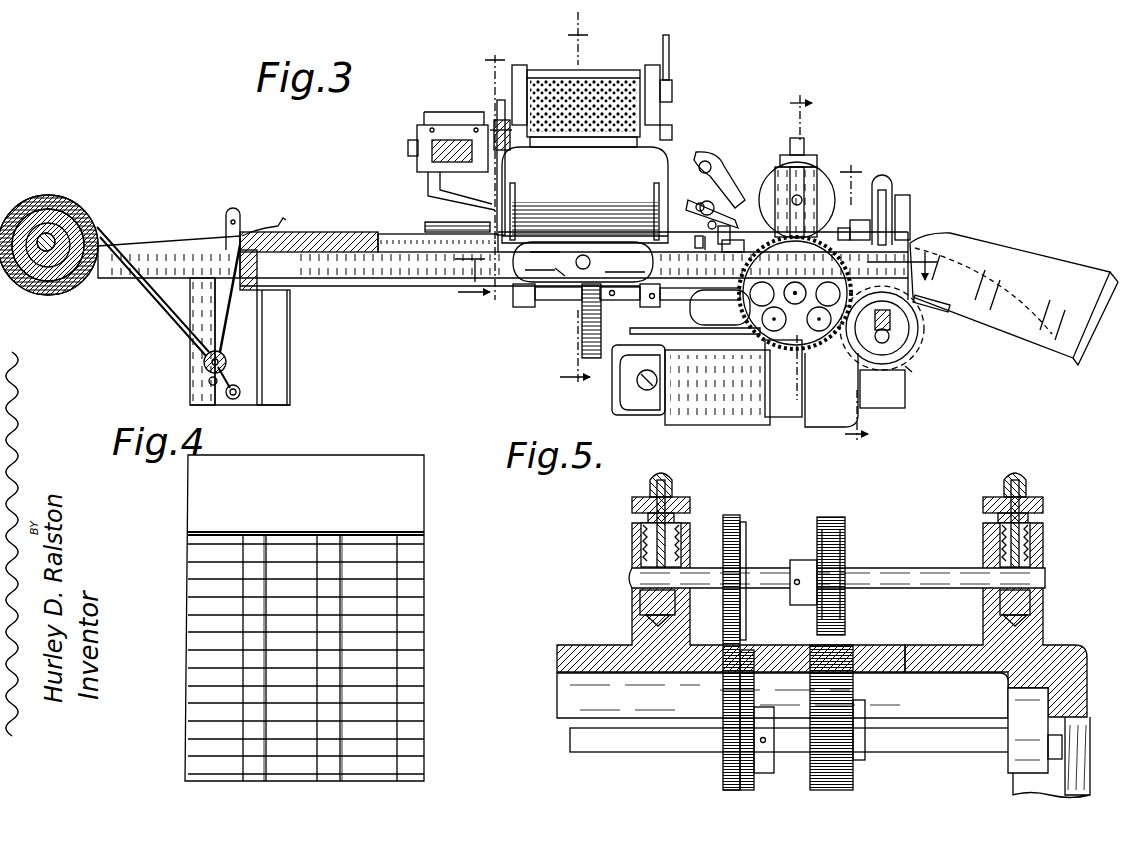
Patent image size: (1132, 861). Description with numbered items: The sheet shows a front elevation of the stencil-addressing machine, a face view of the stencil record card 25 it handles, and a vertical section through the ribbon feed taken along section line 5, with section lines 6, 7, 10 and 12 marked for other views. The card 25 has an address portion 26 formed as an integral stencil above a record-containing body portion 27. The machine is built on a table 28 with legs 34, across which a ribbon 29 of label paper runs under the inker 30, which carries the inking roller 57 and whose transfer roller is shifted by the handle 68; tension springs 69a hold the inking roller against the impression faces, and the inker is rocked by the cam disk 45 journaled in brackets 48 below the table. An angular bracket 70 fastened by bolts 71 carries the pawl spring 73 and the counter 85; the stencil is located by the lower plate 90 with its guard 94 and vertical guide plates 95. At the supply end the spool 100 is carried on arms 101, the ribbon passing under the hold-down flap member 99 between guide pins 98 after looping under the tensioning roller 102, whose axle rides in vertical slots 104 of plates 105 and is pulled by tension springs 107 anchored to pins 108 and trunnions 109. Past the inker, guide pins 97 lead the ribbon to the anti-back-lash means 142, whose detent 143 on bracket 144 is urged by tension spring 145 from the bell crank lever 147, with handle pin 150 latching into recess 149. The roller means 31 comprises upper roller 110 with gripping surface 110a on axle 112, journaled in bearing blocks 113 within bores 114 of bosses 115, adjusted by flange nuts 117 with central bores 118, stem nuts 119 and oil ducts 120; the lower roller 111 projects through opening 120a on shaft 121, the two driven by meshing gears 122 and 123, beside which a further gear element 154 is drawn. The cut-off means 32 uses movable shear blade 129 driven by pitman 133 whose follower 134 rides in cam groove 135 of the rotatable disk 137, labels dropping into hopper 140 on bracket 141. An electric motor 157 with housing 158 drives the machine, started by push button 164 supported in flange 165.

In FIG. 3, the spool 100 is at (47, 232).
In FIG. 3, the arms 101 is at (148, 252).
In FIG. 3, the guide pins 98 is at (251, 232).
In FIG. 3, the hold-down flap member 99 is at (264, 226).
In FIG. 3, the table 28 is at (342, 237).
In FIG. 5, the table 28 is at (560, 660).
In FIG. 3, the vertical slots 104 is at (213, 310).
In FIG. 3, the pins 108 is at (246, 296).
In FIG. 3, the legs 34 is at (276, 380).
In FIG. 3, the tension springs 107 is at (242, 360).
In FIG. 3, the ribbon 29 is at (166, 322).
In FIG. 5, the ribbon 29 is at (904, 644).
In FIG. 3, the horizontal roller 102 is at (204, 358).
In FIG. 3, the plates 105 is at (198, 372).
In FIG. 3, the trunnions 109 is at (240, 398).
In FIG. 3, the counter 85 is at (452, 138).
In FIG. 3, the angular bracket 70 is at (496, 192).
In FIG. 3, the bolts 71 is at (445, 223).
In FIG. 3, the tension spring 73 is at (508, 147).
In FIG. 3, the inking roller 57 is at (610, 82).
In FIG. 3, the handle 68 is at (672, 54).
In FIG. 3, the inker 30 is at (692, 104).
In FIG. 3, the section line 10 is at (580, 209).
In FIG. 3, the section line 7 is at (481, 175).
In FIG. 3, the section line 6 is at (699, 269).
In FIG. 3, the section line 5 is at (797, 237).
In FIG. 3, the section line 12 is at (854, 303).
In FIG. 3, the guard 94 is at (574, 158).
In FIG. 3, the vertical guide plates 95 is at (516, 198).
In FIG. 3, the recess 149 is at (700, 205).
In FIG. 3, the lower plate 90 is at (507, 247).
In FIG. 3, the brackets 48 is at (522, 307).
In FIG. 3, the cam disk 45 is at (590, 308).
In FIG. 3, the push button 164 is at (560, 272).
In FIG. 3, the electric motor 157 is at (636, 413).
In FIG. 3, the lower ribbon-feed roller 111 is at (792, 333).
In FIG. 5, the lower ribbon-feed roller 111 is at (840, 698).
In FIG. 3, the housing 158 is at (777, 398).
In FIG. 3, the rotatable disk 137 is at (913, 322).
In FIG. 3, the cam groove 135 is at (912, 336).
In FIG. 3, the pitman 133 is at (910, 361).
In FIG. 3, the follower 134 is at (910, 374).
In FIG. 3, the receiving hopper 140 is at (1043, 338).
In FIG. 3, the bracket 141 is at (937, 303).
In FIG. 3, the upper roller 110 is at (774, 186).
In FIG. 5, the upper roller 110 is at (846, 530).
In FIG. 3, the roller means 31 is at (827, 142).
In FIG. 3, the bosses 115 is at (803, 178).
In FIG. 5, the bosses 115 is at (632, 540).
In FIG. 3, the movable shear blade 129 is at (887, 178).
In FIG. 3, the cut-off means 32 is at (902, 190).
In FIG. 3, the bell crank lever 147 is at (705, 174).
In FIG. 3, the bracket 144 is at (708, 155).
In FIG. 3, the anti-back-lash means 142 is at (723, 152).
In FIG. 3, the tension springs 69a is at (672, 141).
In FIG. 3, the detent 143 is at (710, 204).
In FIG. 3, the guide pins 97 is at (726, 228).
In FIG. 3, the tension spring 145 is at (699, 244).
In FIG. 3, the handle pin 150 is at (707, 250).
In FIG. 3, the flange 165 is at (739, 254).
In FIG. 4, the stencil record card 25 is at (186, 534).
In FIG. 4, the address portion 26 is at (200, 509).
In FIG. 4, the record-containing body portion 27 is at (212, 676).
In FIG. 5, the flange nuts 117 is at (1044, 507).
In FIG. 5, the stem nut 119 is at (1026, 496).
In FIG. 5, the central bore 118 is at (1034, 514).
In FIG. 5, the axial oil ducts 120 is at (1004, 502).
In FIG. 5, the axle 112 is at (880, 580).
In FIG. 5, the bearing blocks 113 is at (640, 596).
In FIG. 5, the bores 114 is at (643, 613).
In FIG. 5, the shaft 121 is at (906, 748).
In FIG. 5, the gear 122 is at (740, 520).
In FIG. 5, the gear 123 is at (723, 772).
In FIG. 5, the pinion 154 is at (754, 784).
In FIG. 5, the resilient gripping surface 110a is at (829, 535).
In FIG. 5, the opening 120a is at (870, 645).